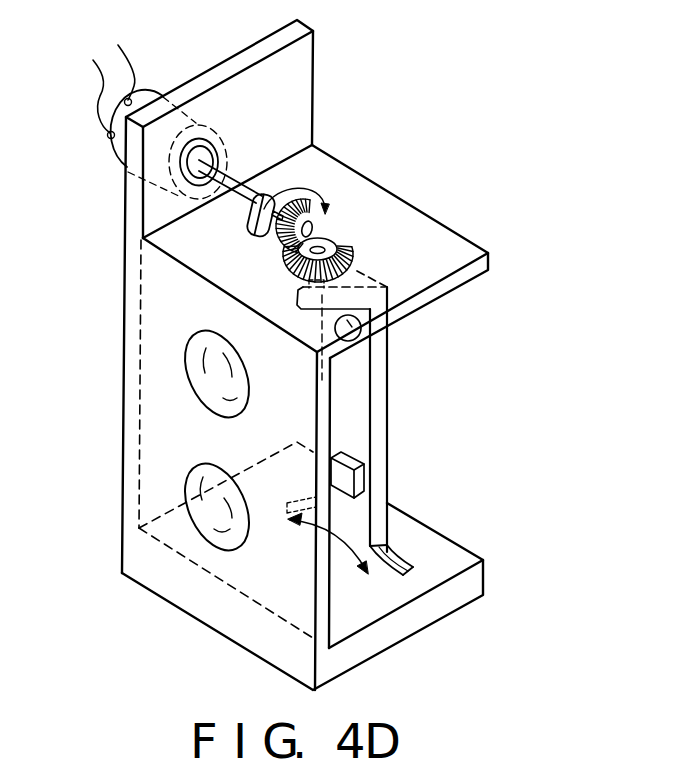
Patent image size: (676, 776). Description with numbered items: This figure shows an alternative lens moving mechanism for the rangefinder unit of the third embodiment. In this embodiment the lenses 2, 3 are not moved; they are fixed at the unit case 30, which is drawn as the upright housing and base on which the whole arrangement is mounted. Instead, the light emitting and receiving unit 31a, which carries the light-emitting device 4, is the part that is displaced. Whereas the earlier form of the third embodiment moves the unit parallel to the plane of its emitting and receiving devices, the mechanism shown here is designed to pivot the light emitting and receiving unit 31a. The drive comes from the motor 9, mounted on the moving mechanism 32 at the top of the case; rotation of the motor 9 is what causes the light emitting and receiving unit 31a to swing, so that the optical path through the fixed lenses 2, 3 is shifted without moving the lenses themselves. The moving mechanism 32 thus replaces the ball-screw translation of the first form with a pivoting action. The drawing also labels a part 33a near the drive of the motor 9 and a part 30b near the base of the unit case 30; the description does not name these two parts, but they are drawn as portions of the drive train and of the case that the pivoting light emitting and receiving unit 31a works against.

The lens 2 is at (190, 383).
The lens 3 is at (247, 545).
The light-emitting device 4 is at (380, 343).
The motor 9 is at (125, 157).
The unit case 30 is at (485, 562).
The stopper foot 30b is at (400, 552).
The light emitting and receiving unit 31a is at (386, 425).
The moving mechanism 32 is at (228, 112).
The bevel gear 33a is at (327, 243).